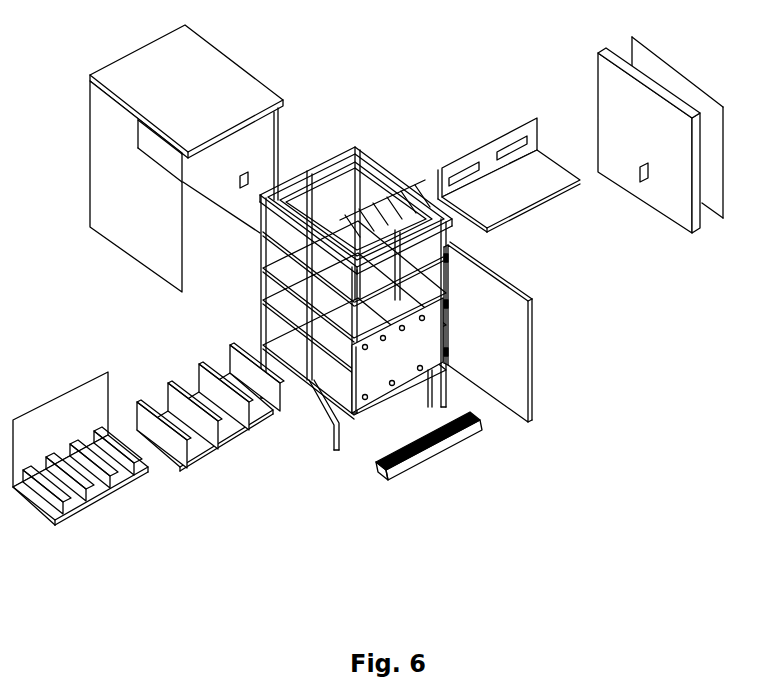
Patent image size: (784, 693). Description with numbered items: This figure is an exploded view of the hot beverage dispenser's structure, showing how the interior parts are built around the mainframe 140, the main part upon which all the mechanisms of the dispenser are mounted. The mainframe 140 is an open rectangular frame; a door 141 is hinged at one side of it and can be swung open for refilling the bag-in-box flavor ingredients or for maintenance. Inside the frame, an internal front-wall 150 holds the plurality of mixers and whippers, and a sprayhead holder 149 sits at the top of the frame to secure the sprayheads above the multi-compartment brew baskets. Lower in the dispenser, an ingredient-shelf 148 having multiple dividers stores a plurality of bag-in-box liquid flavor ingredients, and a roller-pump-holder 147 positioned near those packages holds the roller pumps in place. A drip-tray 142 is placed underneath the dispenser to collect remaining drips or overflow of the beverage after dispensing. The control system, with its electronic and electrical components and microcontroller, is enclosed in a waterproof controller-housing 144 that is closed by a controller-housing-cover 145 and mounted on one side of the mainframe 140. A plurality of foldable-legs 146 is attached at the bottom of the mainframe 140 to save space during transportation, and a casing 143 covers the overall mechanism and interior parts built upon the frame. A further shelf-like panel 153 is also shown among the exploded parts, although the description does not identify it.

The mainframe 140 is at (355, 147).
The door 141 is at (490, 272).
The drip-tray 142 is at (430, 458).
The casing 143 is at (262, 97).
The controller-housing 144 is at (603, 80).
The controller-housing-cover 145 is at (717, 215).
The foldable-legs 146 is at (330, 432).
The roller-pump-holder 147 is at (180, 453).
The ingredient-shelf 148 is at (97, 495).
The sprayhead holder 149 is at (395, 193).
The internal front-wall 150 is at (380, 368).
The shelf panel 153 is at (495, 188).